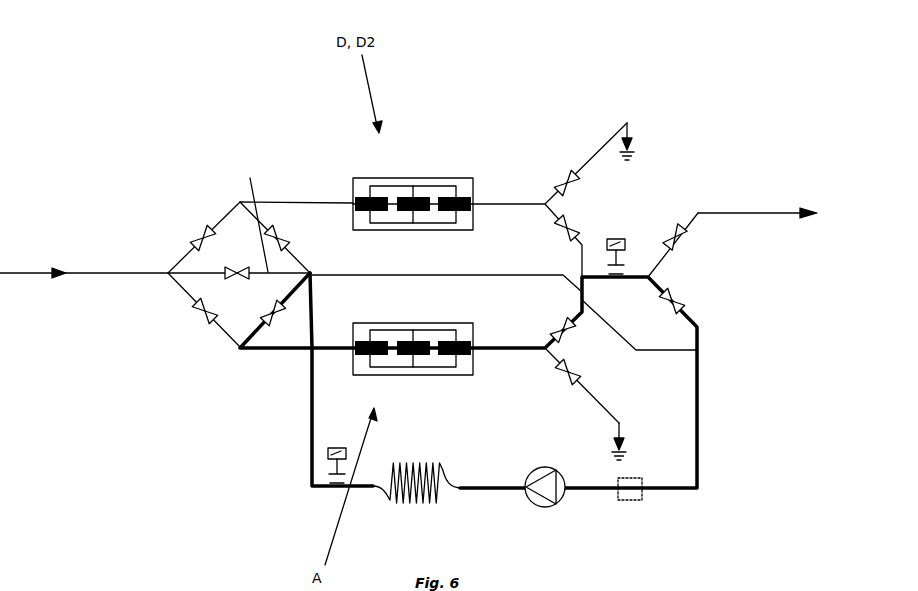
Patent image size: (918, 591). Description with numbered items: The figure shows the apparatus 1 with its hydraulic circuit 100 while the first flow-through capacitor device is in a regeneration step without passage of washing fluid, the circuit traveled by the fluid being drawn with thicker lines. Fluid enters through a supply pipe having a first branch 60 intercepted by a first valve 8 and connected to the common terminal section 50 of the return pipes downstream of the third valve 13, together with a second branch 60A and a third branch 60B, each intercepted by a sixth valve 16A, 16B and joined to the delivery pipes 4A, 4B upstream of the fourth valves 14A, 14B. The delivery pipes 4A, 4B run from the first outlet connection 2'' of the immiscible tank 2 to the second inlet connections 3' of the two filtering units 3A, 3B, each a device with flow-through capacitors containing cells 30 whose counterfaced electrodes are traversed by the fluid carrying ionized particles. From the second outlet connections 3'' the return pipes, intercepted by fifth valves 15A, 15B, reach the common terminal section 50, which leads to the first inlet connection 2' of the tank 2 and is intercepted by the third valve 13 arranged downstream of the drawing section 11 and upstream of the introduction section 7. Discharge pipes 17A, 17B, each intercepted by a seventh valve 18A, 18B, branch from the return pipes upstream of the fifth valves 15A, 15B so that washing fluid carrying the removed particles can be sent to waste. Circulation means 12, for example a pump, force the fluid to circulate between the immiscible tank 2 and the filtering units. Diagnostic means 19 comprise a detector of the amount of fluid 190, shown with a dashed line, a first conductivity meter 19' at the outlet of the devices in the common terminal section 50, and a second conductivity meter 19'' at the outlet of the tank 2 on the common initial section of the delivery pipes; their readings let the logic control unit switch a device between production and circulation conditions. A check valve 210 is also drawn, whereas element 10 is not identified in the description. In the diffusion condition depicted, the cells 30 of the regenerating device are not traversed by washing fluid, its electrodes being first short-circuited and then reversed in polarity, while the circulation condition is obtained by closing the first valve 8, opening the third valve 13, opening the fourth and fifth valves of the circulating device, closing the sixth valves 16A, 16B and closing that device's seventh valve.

The apparatus 1 is at (185, 98).
The hydraulic circuit 100 is at (132, 412).
The first valve 8 is at (234, 276).
The first branch 60 is at (255, 215).
The second branch 60A is at (222, 216).
The third branch 60B is at (230, 346).
The sixth valve 16A is at (192, 232).
The sixth valve 16B is at (193, 313).
The fourth valve 14A is at (288, 235).
The fourth valve 14B is at (284, 314).
The delivery pipe 4A is at (298, 262).
The delivery pipe 4B is at (260, 350).
The filtering unit 3A is at (421, 152).
The filtering unit 3B is at (478, 292).
The second inlet connection 3' is at (339, 275).
The second outlet connection 3'' is at (497, 287).
The cells 30 is at (466, 197).
The seventh valve 18A is at (558, 177).
The seventh valve 18B is at (580, 368).
The fifth valve 15A is at (579, 221).
The fifth valve 15B is at (552, 326).
The discharge pipe 17A is at (605, 148).
The discharge pipe 17B is at (597, 398).
The third valve 13 is at (676, 300).
The drawing section 11 is at (674, 237).
The discharge line 10 is at (650, 277).
The diagnostic means 19 is at (449, 325).
The first conductivity meter 19' is at (696, 255).
The second conductivity meter 19'' is at (295, 518).
The introduction section 7 is at (698, 350).
The common terminal section 50 is at (698, 410).
The check valve 210 is at (330, 352).
The immiscible tank 2 is at (416, 506).
The first inlet connection 2' is at (477, 466).
The first outlet connection 2'' is at (362, 514).
The circulation means 12 is at (552, 497).
The detector of the amount of fluid 190 is at (637, 503).